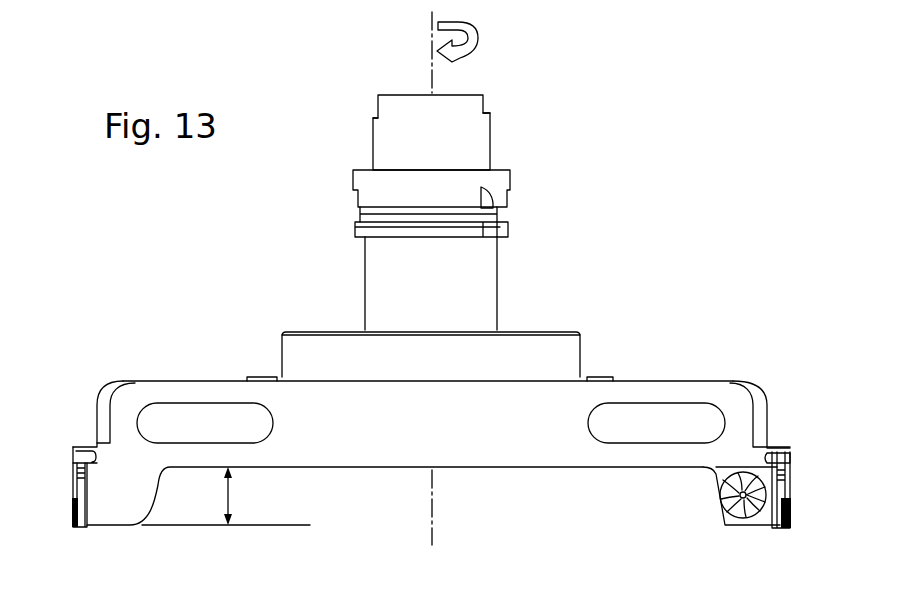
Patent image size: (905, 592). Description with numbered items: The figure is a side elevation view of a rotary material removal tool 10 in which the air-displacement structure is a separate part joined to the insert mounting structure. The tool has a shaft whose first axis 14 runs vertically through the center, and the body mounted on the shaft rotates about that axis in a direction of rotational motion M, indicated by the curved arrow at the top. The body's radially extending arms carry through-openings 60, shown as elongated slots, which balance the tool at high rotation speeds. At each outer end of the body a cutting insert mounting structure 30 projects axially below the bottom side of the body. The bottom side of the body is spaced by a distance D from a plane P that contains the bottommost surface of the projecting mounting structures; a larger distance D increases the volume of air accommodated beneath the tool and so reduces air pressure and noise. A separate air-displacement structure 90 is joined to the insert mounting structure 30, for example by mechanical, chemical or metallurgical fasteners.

The rotary material removal tool 10 is at (622, 212).
The first axis 14 is at (431, 38).
The cutting insert mounting structure 30 is at (62, 501).
The through-opening 60 is at (212, 420).
The separate air-displacement structure 90 is at (738, 525).
The direction of rotational motion M is at (466, 58).
The distance D is at (226, 495).
The plane P is at (172, 527).